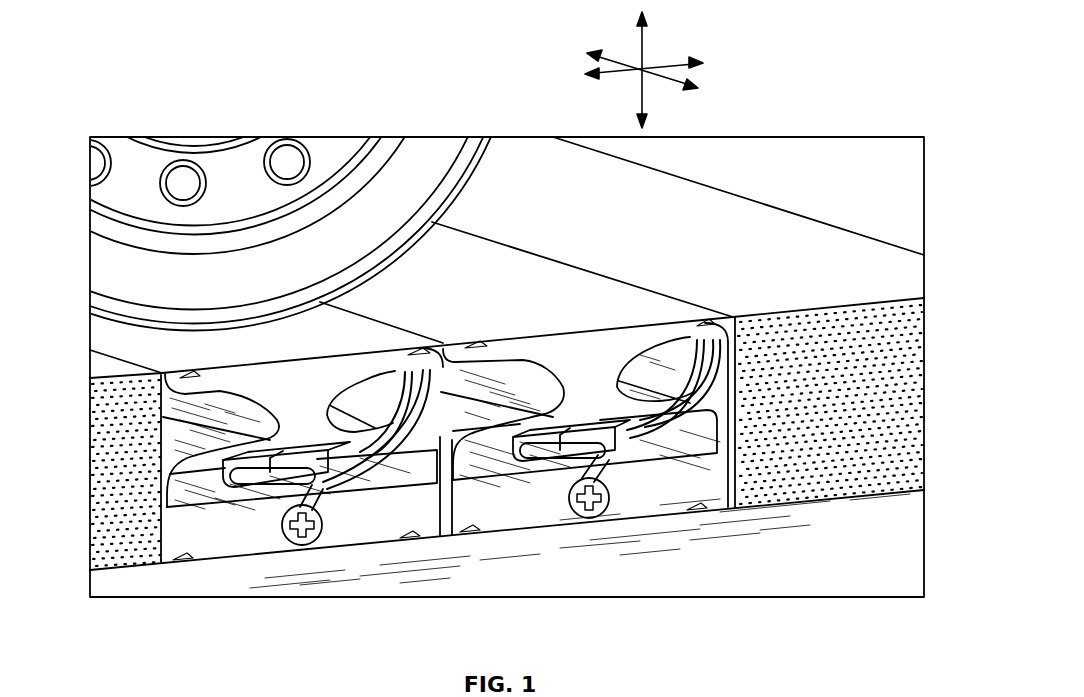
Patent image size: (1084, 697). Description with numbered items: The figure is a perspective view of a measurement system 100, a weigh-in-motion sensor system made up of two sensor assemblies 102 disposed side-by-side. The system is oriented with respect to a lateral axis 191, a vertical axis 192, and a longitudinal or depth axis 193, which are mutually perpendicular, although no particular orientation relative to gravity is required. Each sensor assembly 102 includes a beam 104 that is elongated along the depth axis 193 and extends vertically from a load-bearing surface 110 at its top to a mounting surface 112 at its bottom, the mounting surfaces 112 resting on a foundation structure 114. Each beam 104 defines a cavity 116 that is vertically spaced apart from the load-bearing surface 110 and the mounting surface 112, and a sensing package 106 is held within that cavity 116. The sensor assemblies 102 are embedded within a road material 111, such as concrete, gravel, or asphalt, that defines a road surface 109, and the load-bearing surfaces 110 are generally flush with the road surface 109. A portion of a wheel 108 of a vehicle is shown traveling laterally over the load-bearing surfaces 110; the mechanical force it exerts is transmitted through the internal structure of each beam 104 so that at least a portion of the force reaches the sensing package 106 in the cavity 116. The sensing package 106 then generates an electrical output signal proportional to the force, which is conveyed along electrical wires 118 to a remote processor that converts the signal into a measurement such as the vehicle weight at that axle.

The measurement system 100 is at (773, 150).
The sensor assembly 102 is at (306, 562).
The beam 104 is at (215, 380).
The sensing package 106 is at (268, 466).
The wheel 108 is at (238, 186).
The road surface 109 is at (808, 253).
The load-bearing surface 110 is at (510, 302).
The road material 111 is at (883, 425).
The mounting surface 112 is at (278, 458).
The foundation structure 114 is at (703, 540).
The cavity 116 is at (193, 503).
The electrical wire 118 is at (695, 390).
The lateral axis 191 is at (622, 77).
The vertical axis 192 is at (648, 42).
The longitudinal or depth axis 193 is at (617, 62).